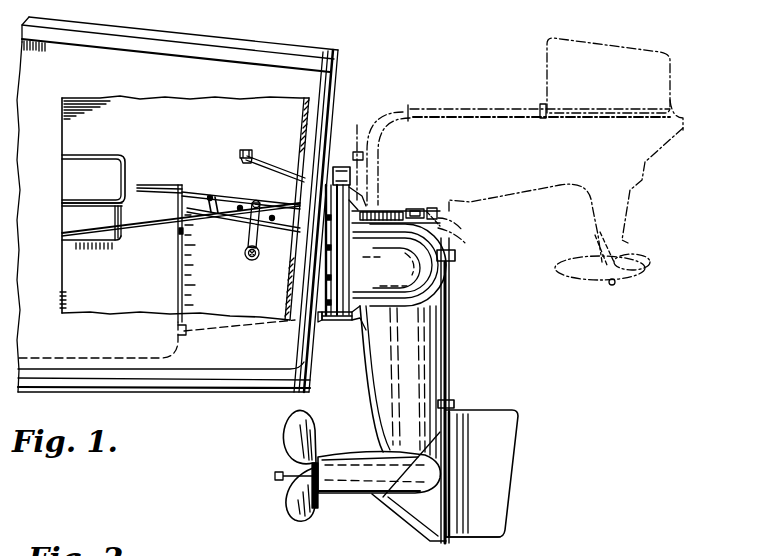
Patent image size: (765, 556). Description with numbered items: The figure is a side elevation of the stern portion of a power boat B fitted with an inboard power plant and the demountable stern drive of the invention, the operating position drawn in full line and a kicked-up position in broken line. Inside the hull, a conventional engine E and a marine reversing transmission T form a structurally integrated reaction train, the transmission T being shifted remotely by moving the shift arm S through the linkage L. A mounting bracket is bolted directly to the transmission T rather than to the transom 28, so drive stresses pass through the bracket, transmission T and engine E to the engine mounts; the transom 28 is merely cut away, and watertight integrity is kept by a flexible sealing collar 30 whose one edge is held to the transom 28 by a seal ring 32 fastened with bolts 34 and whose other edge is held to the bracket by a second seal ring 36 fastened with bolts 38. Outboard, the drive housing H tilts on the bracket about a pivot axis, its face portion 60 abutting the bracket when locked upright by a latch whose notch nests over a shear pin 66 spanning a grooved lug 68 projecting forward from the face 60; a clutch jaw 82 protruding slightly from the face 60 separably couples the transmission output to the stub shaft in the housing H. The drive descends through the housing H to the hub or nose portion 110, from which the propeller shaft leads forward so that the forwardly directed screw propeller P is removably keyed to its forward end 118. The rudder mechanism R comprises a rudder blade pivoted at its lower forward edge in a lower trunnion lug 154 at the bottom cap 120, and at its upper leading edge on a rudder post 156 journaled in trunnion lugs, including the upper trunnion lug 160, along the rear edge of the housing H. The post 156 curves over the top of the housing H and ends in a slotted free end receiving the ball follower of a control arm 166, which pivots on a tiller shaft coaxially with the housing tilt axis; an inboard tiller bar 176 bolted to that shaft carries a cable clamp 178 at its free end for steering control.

The power boat B is at (132, 86).
The transom 28 is at (332, 107).
The engine E is at (128, 182).
The marine reversing transmission T is at (195, 196).
The linkage L is at (142, 224).
The shift arm S is at (247, 235).
The inboard tiller bar 176 is at (272, 168).
The cable clamp 178 is at (246, 152).
The bolts 34 is at (340, 170).
The control arm 166 is at (358, 150).
The second jaw of jaw clutch 82 is at (415, 208).
The grooved lug 68 is at (450, 210).
The shear pin 66 is at (450, 226).
The face portion of drive housing 60 is at (452, 242).
The upper trunnion lug 160 is at (455, 264).
The rudder stock or post 156 is at (450, 345).
The rudder mechanism R is at (548, 70).
The screw propeller P is at (618, 283).
The drive housing H is at (400, 374).
The second seal ring 36 is at (345, 318).
The flexible sealing collar 30 is at (337, 320).
The seal ring 32 is at (323, 330).
The bolts 38 is at (365, 332).
The forward end of propeller shaft 118 is at (276, 474).
The hub or nose portion of housing 110 is at (353, 497).
The bottom cap 120 is at (404, 512).
The lower trunnion lug 154 is at (457, 538).